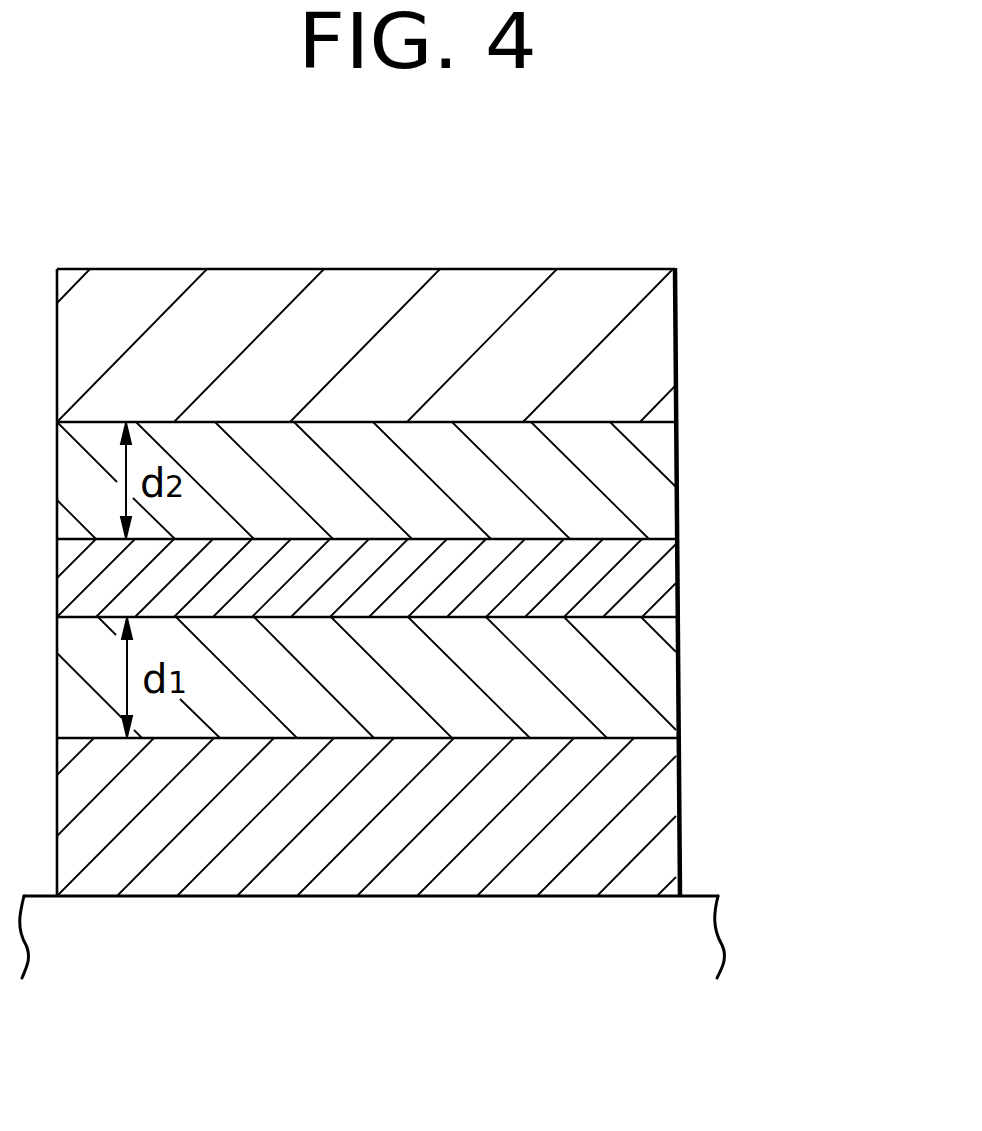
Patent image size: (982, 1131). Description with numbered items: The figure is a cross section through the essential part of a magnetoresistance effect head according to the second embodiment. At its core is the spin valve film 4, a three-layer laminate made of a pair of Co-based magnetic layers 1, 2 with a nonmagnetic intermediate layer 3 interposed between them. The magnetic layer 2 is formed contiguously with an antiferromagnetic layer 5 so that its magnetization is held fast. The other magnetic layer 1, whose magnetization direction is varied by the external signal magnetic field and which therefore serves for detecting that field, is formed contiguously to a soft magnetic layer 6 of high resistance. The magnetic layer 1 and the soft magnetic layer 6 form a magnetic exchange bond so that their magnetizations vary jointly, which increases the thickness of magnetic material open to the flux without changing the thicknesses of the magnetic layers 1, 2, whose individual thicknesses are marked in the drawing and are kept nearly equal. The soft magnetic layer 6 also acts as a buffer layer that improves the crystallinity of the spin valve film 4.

The magnetic layer 1 is at (412, 677).
The magnetic layer 2 is at (640, 484).
The nonmagnetic intermediate layer 3 is at (647, 582).
The spin valve film 4 is at (458, 577).
The antiferromagnetic layer 5 is at (647, 353).
The soft magnetic layer 6 is at (638, 822).